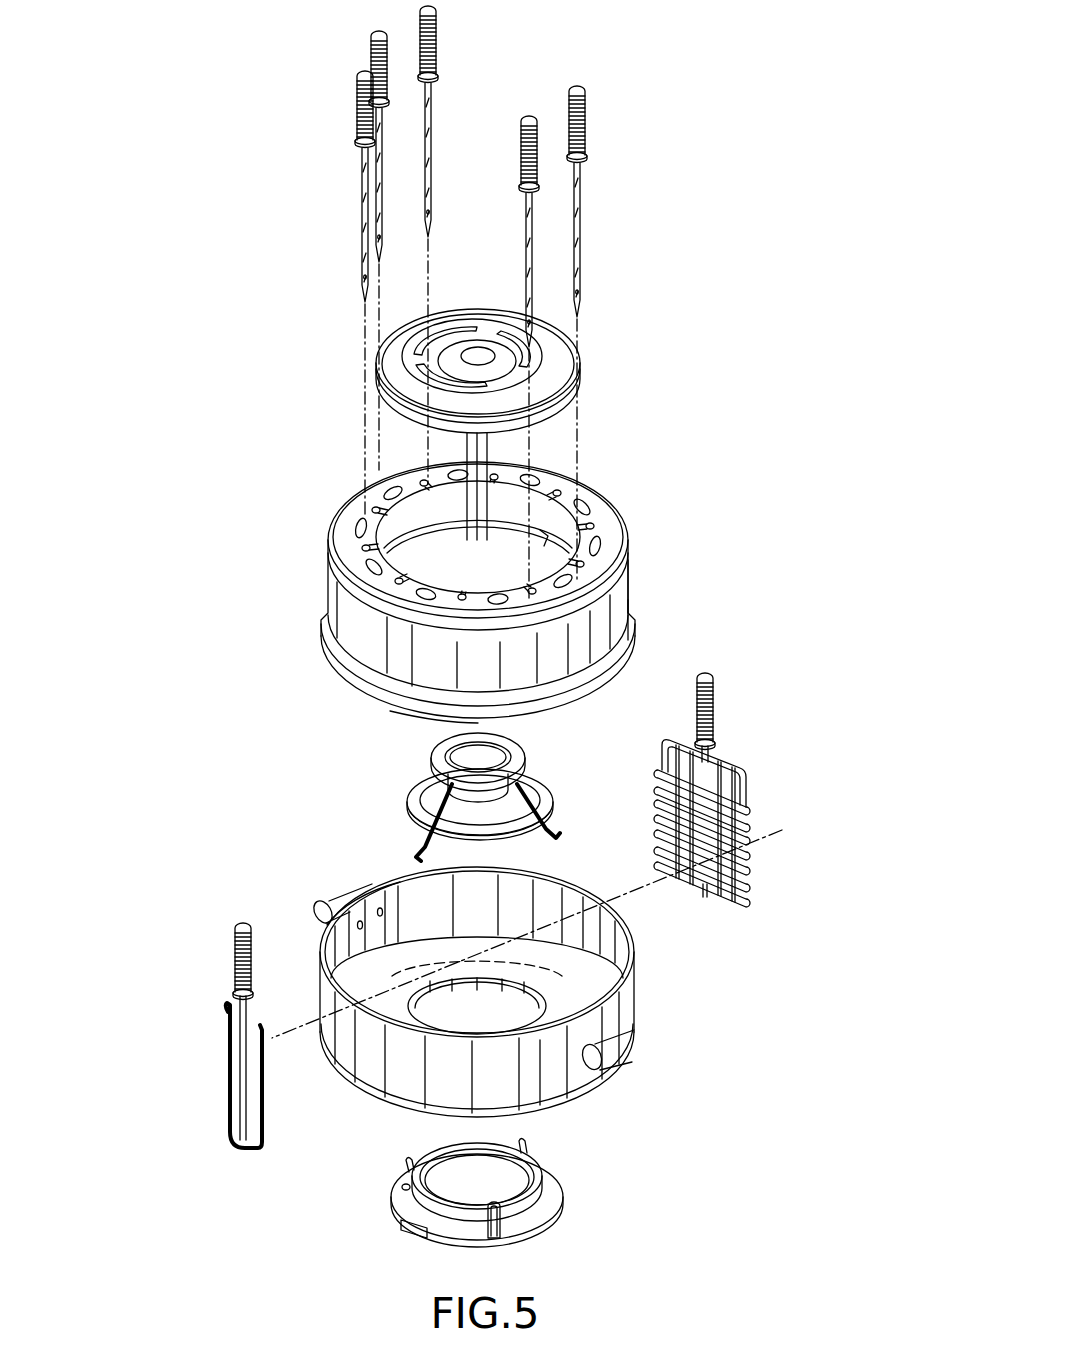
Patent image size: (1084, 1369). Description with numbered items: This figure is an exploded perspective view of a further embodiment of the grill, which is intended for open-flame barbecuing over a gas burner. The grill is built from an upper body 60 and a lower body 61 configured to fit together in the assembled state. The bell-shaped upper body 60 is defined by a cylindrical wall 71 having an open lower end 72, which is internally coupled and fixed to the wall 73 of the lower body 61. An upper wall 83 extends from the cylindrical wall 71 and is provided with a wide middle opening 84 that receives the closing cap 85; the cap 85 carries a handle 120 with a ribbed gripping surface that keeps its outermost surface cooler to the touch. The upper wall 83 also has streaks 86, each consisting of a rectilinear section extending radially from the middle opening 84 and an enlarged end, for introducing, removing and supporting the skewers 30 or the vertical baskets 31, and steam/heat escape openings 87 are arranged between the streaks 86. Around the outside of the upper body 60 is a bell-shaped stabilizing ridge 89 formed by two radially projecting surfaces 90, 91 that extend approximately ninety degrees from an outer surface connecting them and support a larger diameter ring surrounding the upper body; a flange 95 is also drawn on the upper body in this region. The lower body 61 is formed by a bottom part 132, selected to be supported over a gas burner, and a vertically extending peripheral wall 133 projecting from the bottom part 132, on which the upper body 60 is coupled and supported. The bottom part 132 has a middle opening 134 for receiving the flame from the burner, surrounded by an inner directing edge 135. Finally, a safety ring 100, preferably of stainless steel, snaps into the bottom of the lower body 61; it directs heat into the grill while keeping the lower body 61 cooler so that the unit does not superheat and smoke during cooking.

The skewers 30 is at (592, 190).
The handle 120 is at (470, 344).
The closing cap 85 is at (566, 358).
The streaks 86 is at (378, 510).
The steam/heat escape openings 87 is at (545, 490).
The middle opening 84 is at (546, 535).
The upper wall 83 is at (352, 540).
The upper body 60 is at (348, 617).
The radially projecting surface 91 is at (636, 622).
The stabilizing ridge 89 is at (635, 661).
The flange 95 is at (345, 662).
The cylindrical wall 71 is at (410, 648).
The radially projecting surface 90 is at (600, 690).
The open lower end 72 is at (419, 715).
The vertical baskets 31 is at (748, 790).
The wall 73 is at (385, 882).
The lower body 61 is at (365, 1073).
The bottom part 132 is at (563, 1002).
The middle opening 134 is at (493, 1015).
The inner directing edge 135 is at (439, 993).
The peripheral wall 133 is at (538, 1075).
The safety ring 100 is at (540, 1238).